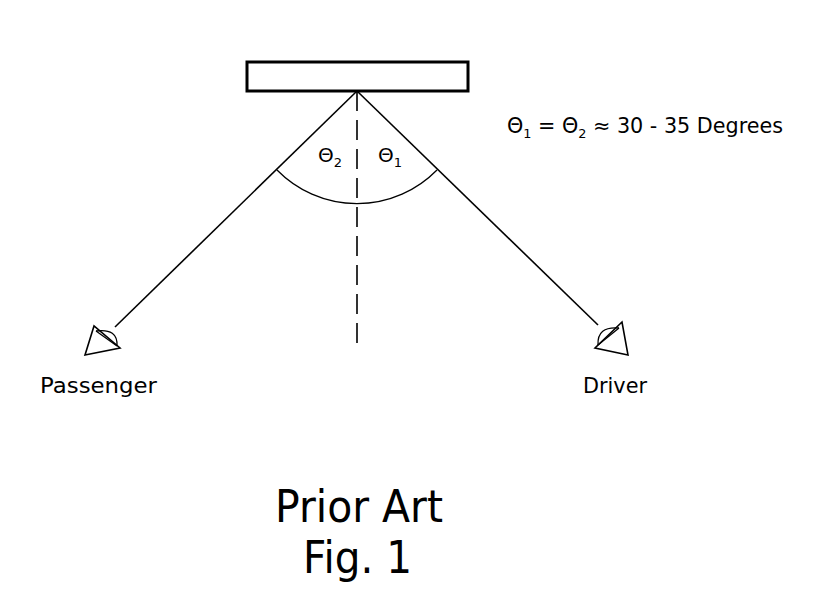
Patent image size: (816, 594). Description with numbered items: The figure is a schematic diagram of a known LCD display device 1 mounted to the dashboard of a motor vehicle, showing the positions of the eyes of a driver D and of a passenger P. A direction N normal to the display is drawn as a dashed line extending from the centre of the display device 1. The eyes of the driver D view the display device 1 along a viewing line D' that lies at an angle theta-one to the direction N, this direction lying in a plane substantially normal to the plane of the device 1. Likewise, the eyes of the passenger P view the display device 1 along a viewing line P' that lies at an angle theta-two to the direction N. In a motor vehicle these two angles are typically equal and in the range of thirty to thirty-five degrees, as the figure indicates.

The LCD display device 1 is at (497, 49).
The direction normal to the display N is at (357, 277).
The passenger P is at (70, 332).
The passenger viewing line P' is at (236, 209).
The driver D is at (645, 332).
The driver viewing line D' is at (480, 208).